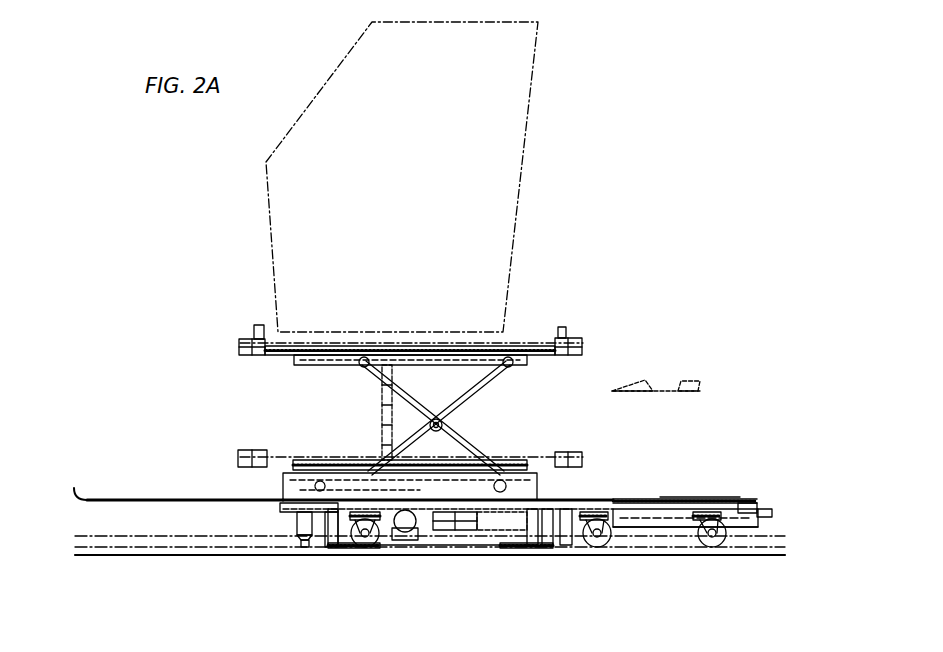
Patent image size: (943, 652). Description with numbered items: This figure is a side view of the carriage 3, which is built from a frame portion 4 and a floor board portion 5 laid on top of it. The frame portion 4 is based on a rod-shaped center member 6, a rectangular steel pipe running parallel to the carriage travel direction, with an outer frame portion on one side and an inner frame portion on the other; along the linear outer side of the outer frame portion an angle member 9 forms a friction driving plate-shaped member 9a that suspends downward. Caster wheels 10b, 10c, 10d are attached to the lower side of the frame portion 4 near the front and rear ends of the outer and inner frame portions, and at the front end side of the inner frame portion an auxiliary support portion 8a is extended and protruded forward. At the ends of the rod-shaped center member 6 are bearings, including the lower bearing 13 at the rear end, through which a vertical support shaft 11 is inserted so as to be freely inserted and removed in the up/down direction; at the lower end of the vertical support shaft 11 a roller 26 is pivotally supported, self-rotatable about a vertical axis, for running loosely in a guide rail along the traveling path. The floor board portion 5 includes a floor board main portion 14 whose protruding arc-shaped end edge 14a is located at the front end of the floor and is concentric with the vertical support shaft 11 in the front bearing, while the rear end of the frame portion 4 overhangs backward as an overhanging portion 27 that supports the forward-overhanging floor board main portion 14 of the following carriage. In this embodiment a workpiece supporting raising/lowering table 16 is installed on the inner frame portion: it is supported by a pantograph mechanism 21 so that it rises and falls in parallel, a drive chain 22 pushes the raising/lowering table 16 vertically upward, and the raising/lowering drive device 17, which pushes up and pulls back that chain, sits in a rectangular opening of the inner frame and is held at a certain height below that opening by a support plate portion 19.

The carriage 3 is at (650, 498).
The frame portion 4 is at (590, 498).
The floor board portion 5 is at (223, 498).
The rod-shaped center member 6 is at (652, 510).
The auxiliary support portion 8a is at (287, 505).
The angle member 9 is at (751, 500).
The friction driving plate-shaped member 9a is at (670, 524).
The caster wheel 10b is at (712, 547).
The caster wheel 10c is at (368, 547).
The caster wheel 10d is at (597, 547).
The vertical support shaft 11 is at (297, 525).
The bearing 13 is at (765, 508).
The floor board main portion 14 is at (167, 499).
The protruding arc-shaped end edge 14a is at (74, 488).
The raising/lowering table 16 is at (430, 345).
The raising/lowering drive device 17 is at (447, 532).
The support plate portion 19 is at (347, 548).
The pantograph mechanism 21 is at (475, 438).
The drive chain 22 is at (382, 423).
The roller 26 is at (305, 547).
The overhanging portion 27 is at (688, 498).